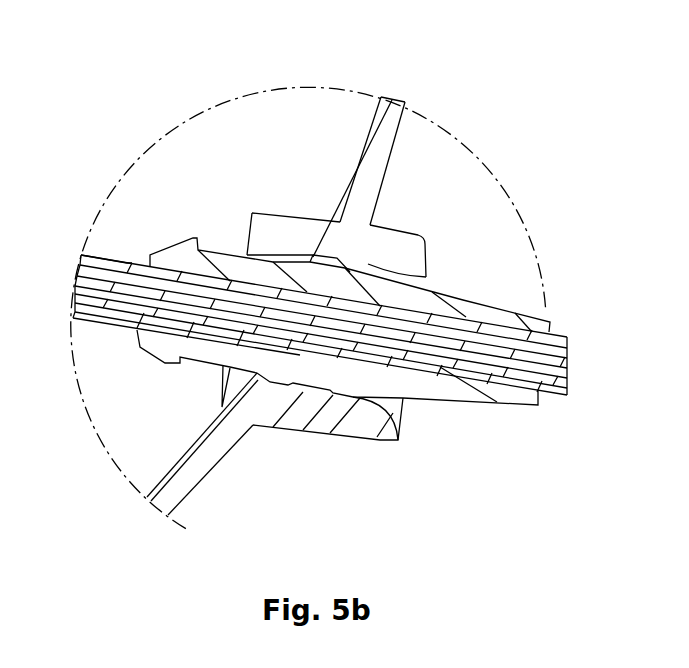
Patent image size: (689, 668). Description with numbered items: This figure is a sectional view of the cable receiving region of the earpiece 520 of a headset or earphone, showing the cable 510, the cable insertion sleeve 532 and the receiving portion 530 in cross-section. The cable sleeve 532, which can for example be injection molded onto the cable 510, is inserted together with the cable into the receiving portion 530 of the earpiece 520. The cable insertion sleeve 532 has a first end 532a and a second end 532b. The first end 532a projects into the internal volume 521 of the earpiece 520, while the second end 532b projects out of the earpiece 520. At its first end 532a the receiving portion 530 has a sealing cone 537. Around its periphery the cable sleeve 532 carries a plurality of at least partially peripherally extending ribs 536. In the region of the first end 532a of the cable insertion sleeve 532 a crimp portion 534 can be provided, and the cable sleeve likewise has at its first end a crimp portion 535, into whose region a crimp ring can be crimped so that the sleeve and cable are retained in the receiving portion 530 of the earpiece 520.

The cable 510 is at (118, 264).
The earpiece 520 is at (383, 134).
The internal volume 521 is at (290, 126).
The receiving portion 530 is at (424, 238).
The cable insertion sleeve 532 is at (466, 298).
The first end 532a is at (172, 268).
The second end 532b is at (545, 314).
The crimp portion 534 is at (228, 260).
The crimp portion 535 is at (200, 363).
The ribs 536 is at (337, 404).
The sealing cone 537 is at (256, 390).